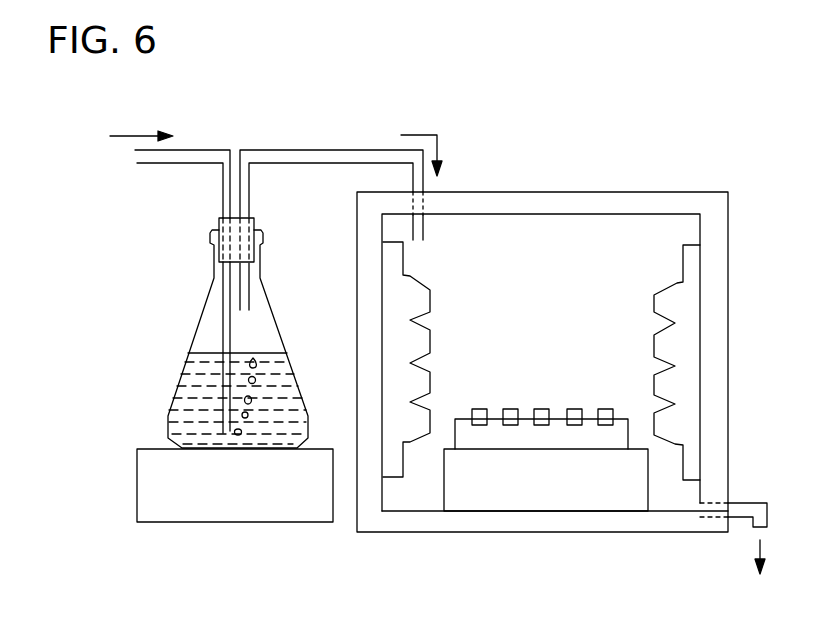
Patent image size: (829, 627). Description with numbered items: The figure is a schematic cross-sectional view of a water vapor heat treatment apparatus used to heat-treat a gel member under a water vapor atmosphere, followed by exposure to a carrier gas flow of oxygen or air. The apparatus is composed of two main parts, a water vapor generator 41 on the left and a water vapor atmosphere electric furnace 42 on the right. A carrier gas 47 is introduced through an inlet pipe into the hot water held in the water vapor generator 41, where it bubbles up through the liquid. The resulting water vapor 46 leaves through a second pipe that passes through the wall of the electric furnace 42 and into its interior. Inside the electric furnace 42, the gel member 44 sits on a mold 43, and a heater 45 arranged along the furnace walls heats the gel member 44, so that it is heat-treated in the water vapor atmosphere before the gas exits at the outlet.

The water vapor generator 41 is at (172, 374).
The water vapor atmosphere electric furnace 42 is at (582, 202).
The mold 43 is at (622, 437).
The gel member 44 is at (560, 401).
The heater 45 is at (688, 303).
The water vapor 46 is at (432, 135).
The carrier gas 47 is at (123, 133).